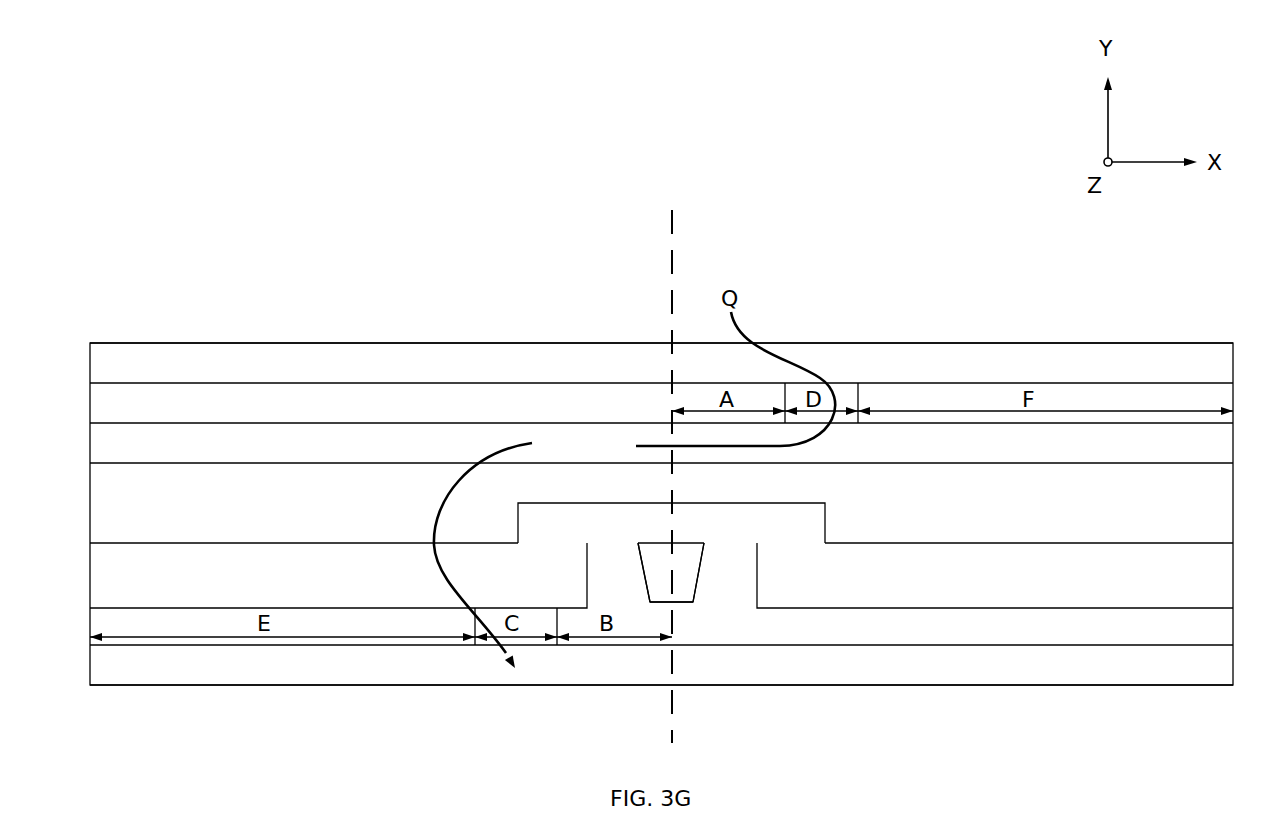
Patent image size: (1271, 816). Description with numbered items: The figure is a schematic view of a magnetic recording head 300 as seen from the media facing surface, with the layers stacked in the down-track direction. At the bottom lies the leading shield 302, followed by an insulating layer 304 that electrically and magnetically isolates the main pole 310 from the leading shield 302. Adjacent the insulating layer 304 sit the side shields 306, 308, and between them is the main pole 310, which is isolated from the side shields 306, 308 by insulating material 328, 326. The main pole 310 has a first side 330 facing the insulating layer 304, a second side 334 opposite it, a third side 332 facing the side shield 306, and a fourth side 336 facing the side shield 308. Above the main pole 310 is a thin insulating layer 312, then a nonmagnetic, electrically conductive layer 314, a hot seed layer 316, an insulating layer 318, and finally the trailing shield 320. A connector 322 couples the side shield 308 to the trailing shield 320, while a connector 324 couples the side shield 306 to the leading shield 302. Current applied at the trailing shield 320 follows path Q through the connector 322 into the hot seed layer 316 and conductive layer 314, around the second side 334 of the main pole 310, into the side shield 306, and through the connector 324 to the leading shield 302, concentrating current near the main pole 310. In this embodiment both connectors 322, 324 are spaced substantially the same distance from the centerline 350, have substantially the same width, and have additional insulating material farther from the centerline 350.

The magnetic recording head 300 is at (166, 208).
The leading shield 302 is at (631, 678).
The insulating layer 304 is at (850, 641).
The side shield 306 is at (372, 588).
The side shield 308 is at (1032, 588).
The main pole 310 is at (683, 590).
The insulating layer 312 is at (730, 535).
The nonmagnetic, electrically conductive layer 314 is at (730, 497).
The hot seed layer 316 is at (690, 446).
The insulating layer 318 is at (225, 415).
The trailing shield 320 is at (631, 372).
The connector 322 is at (849, 393).
The connector 324 is at (497, 618).
The insulating material 326 is at (749, 593).
The insulating material 328 is at (635, 593).
The first side 330 is at (680, 595).
The third side 332 is at (641, 555).
The second side 334 is at (661, 543).
The fourth side 336 is at (704, 555).
The centerline 350 is at (672, 250).